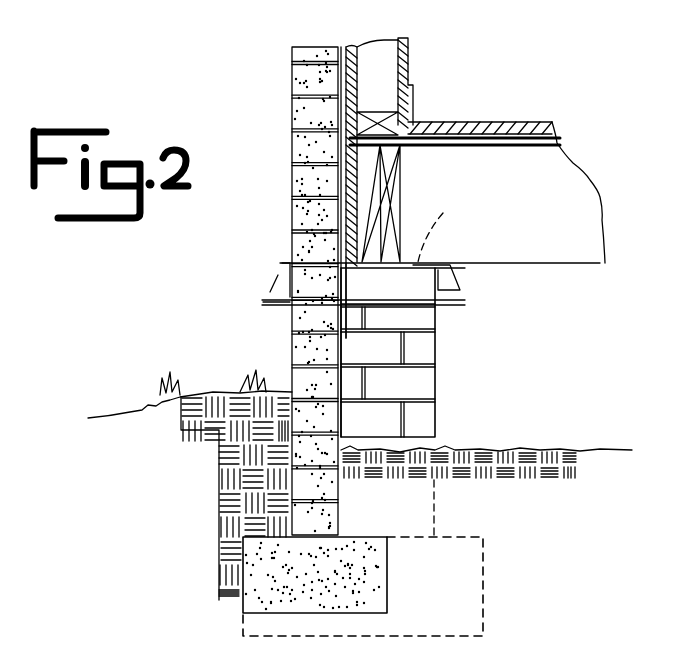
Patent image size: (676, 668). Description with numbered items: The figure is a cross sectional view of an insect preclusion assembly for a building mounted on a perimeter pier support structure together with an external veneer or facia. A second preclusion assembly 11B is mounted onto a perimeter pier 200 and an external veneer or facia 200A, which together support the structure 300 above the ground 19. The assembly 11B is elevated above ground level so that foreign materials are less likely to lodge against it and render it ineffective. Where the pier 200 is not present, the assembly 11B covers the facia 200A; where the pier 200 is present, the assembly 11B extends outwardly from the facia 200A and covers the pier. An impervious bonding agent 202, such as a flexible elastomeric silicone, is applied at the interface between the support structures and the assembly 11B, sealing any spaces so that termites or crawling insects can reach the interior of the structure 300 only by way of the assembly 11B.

The ground 19 is at (213, 430).
The second preclusion assembly 11B is at (270, 267).
The perimeter pier 200 is at (410, 386).
The external veneer or facia 200A is at (291, 352).
The bonding agent 202 is at (291, 312).
The structure 300 is at (549, 199).